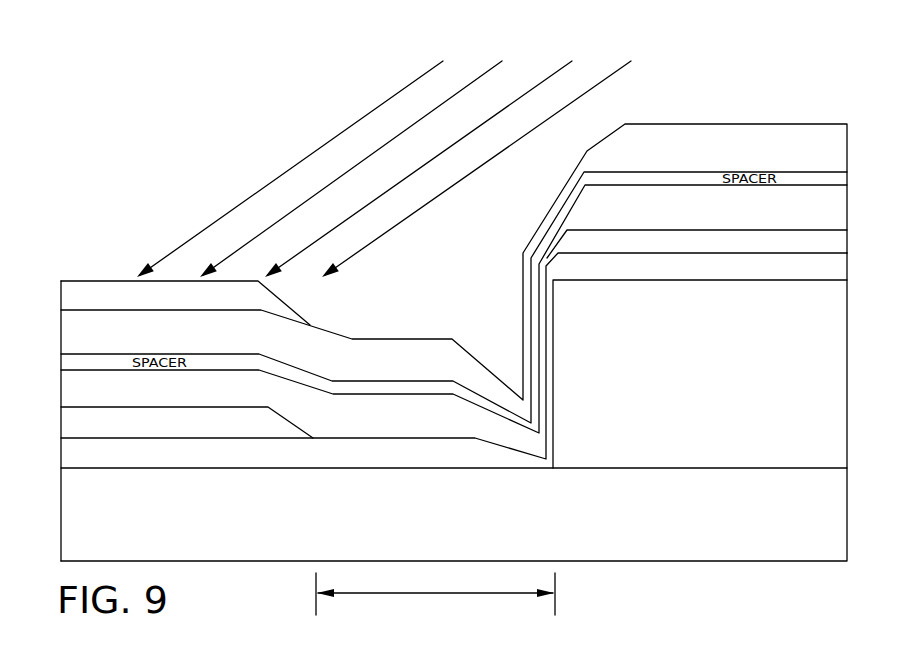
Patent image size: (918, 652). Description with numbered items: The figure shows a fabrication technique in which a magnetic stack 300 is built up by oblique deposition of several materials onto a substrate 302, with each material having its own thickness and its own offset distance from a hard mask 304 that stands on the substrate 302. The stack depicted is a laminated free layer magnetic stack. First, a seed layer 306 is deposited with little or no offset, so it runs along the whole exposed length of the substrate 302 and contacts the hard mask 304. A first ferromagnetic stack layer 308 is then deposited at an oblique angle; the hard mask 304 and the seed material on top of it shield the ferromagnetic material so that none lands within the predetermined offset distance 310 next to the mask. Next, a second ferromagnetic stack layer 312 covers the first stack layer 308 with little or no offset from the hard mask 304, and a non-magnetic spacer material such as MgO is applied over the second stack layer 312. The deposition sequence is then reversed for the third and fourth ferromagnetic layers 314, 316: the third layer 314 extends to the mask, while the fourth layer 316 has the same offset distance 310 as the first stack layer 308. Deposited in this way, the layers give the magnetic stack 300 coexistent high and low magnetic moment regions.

The magnetic stack 300 is at (61, 280).
The substrate 302 is at (454, 514).
The hard mask 304 is at (700, 374).
The seed layer 306 is at (454, 360).
The first ferromagnetic stack layer 308 is at (454, 334).
The offset distance 310 is at (435, 596).
The second ferromagnetic stack layer 312 is at (454, 309).
The third ferromagnetic layer 314 is at (454, 262).
The fourth ferromagnetic layer 316 is at (185, 303).